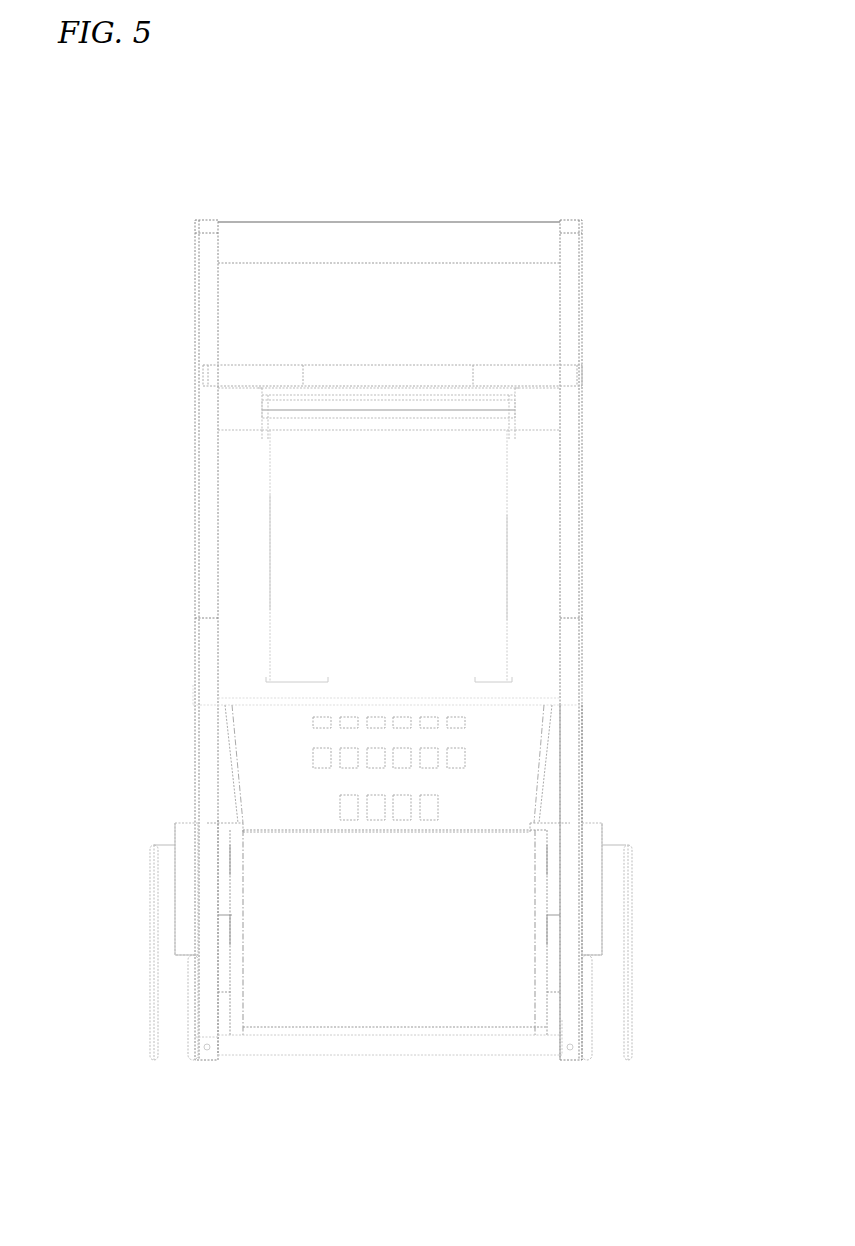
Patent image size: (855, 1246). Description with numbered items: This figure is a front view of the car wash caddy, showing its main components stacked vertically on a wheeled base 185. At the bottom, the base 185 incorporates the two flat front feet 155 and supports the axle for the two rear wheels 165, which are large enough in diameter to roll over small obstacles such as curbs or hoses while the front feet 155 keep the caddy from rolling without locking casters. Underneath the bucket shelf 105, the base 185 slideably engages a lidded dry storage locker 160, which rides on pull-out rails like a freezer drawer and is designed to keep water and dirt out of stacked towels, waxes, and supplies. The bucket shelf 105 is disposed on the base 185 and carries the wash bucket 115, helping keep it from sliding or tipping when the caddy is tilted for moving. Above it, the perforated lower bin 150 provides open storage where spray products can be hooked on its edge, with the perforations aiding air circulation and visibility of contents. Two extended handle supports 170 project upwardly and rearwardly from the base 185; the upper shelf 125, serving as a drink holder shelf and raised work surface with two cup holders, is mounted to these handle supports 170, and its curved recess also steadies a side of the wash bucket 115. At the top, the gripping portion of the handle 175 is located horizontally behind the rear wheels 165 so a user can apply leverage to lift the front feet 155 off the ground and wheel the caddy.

The bucket shelf 105 is at (245, 690).
The wash bucket 115 is at (463, 586).
The upper shelf 125 is at (259, 374).
The lower bin 150 is at (510, 774).
The front feet 155 is at (208, 1057).
The dry storage locker 160 is at (447, 958).
The rear wheels 165 is at (175, 1003).
The handle supports 170 is at (570, 306).
The handle 175 is at (374, 238).
The base 185 is at (572, 803).